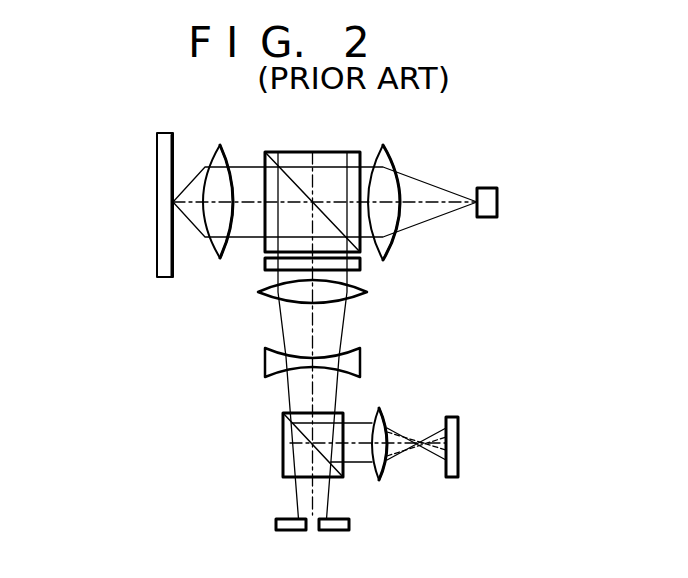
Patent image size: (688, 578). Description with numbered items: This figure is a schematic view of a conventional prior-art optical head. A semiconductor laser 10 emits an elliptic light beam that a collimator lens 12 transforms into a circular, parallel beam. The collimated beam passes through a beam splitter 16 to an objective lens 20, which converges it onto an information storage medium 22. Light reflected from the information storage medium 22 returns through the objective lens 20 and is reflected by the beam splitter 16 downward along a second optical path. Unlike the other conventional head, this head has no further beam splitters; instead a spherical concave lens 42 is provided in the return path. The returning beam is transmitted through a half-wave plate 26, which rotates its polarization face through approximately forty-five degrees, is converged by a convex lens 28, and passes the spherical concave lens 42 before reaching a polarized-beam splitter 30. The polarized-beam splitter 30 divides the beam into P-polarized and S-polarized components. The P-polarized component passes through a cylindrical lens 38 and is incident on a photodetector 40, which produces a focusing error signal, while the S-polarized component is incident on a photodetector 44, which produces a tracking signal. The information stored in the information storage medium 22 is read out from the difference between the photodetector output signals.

The semiconductor laser 10 is at (484, 188).
The collimator lens 12 is at (384, 147).
The beam splitter 16 is at (322, 152).
The objective lens 20 is at (220, 145).
The information storage medium 22 is at (157, 165).
The half-wave plate 26 is at (360, 266).
The convex lens 28 is at (367, 292).
The polarized-beam splitter 30 is at (284, 428).
The cylindrical lens 38 is at (379, 408).
The photodetector 40 is at (452, 417).
The spherical concave lens 42 is at (360, 358).
The photodetector 44 is at (278, 519).